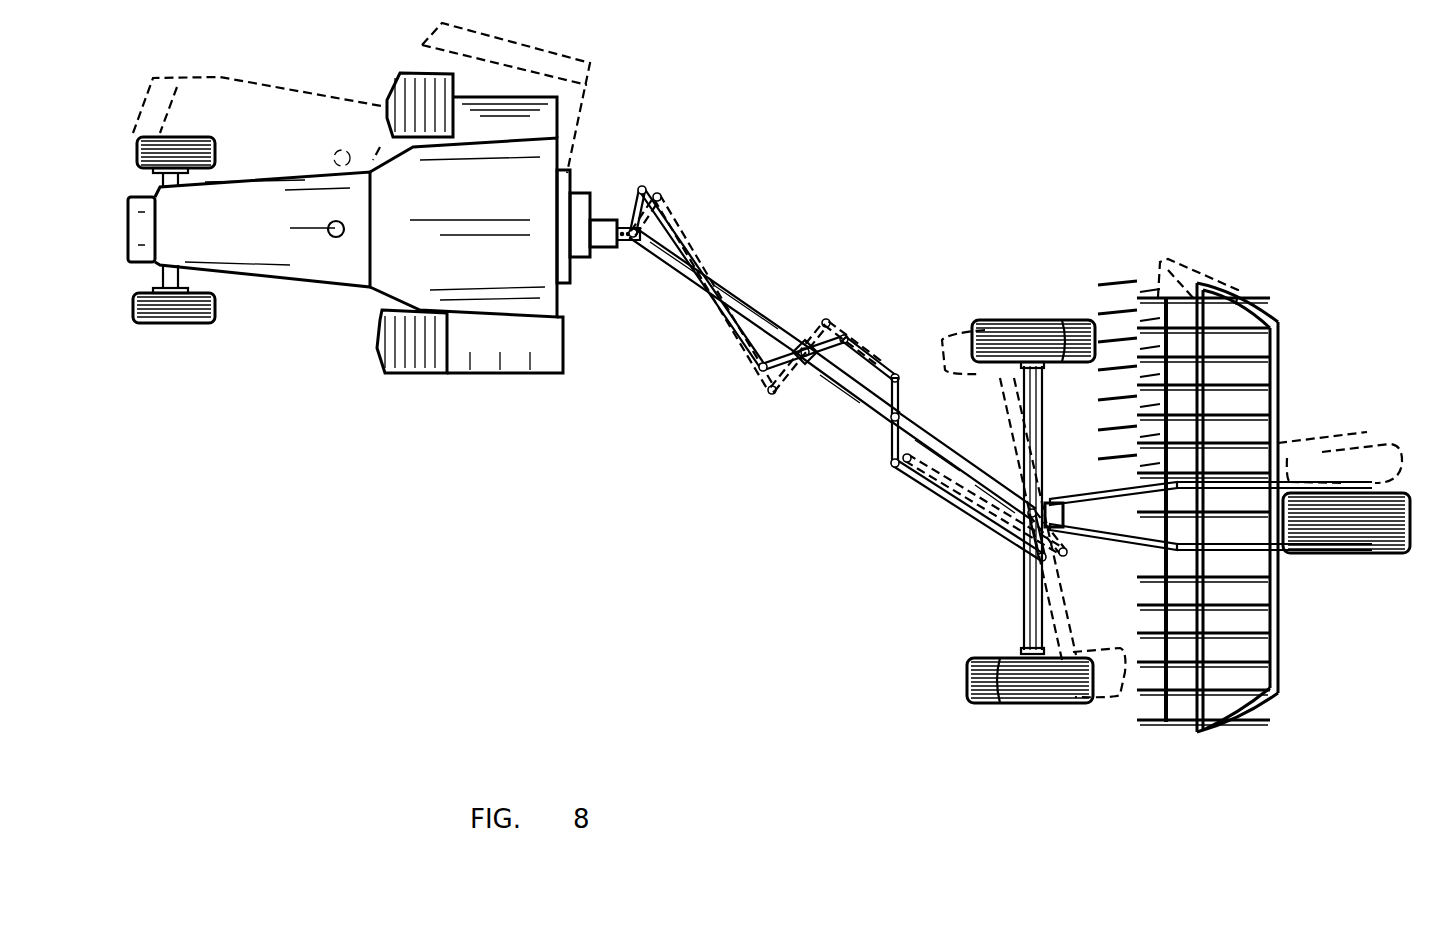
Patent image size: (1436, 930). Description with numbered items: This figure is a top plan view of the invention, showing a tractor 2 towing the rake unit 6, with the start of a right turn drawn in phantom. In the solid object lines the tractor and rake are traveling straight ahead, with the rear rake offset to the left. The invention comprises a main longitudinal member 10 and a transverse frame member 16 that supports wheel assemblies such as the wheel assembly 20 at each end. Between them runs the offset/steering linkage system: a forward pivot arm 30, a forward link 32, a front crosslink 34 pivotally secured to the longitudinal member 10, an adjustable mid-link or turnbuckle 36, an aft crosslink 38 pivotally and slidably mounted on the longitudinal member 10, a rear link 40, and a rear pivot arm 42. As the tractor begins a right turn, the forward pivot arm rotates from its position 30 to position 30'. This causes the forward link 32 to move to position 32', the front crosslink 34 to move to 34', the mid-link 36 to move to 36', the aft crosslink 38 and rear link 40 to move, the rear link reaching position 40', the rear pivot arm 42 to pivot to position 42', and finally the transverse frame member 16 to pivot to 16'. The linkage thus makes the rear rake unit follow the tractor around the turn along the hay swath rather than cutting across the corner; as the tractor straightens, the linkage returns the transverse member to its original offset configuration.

The tractor 2 is at (390, 302).
The rake implement 6 is at (1276, 386).
The main longitudinal member 10 is at (744, 298).
The transverse frame member 16 is at (1191, 487).
The transverse frame member (pivoted position) 16' is at (1020, 516).
The wheel assembly 20 is at (966, 681).
The forward pivot arm 30 is at (680, 176).
The forward pivot arm (rotated position) 30' is at (706, 204).
The forward link 32 is at (700, 286).
The forward link (moved position) 32' is at (715, 340).
The front crosslink 34 is at (803, 406).
The front crosslink (moved position) 34' is at (818, 318).
The adjustable mid-link or turnbuckle 36 is at (884, 346).
The mid-link (moved position) 36' is at (866, 316).
The aft crosslink 38 is at (928, 447).
The rear link 40 is at (948, 520).
The rear link (moved position) 40' is at (983, 531).
The rear pivot arm 42 is at (1018, 564).
The rear pivot arm (pivoted position) 42' is at (1078, 573).